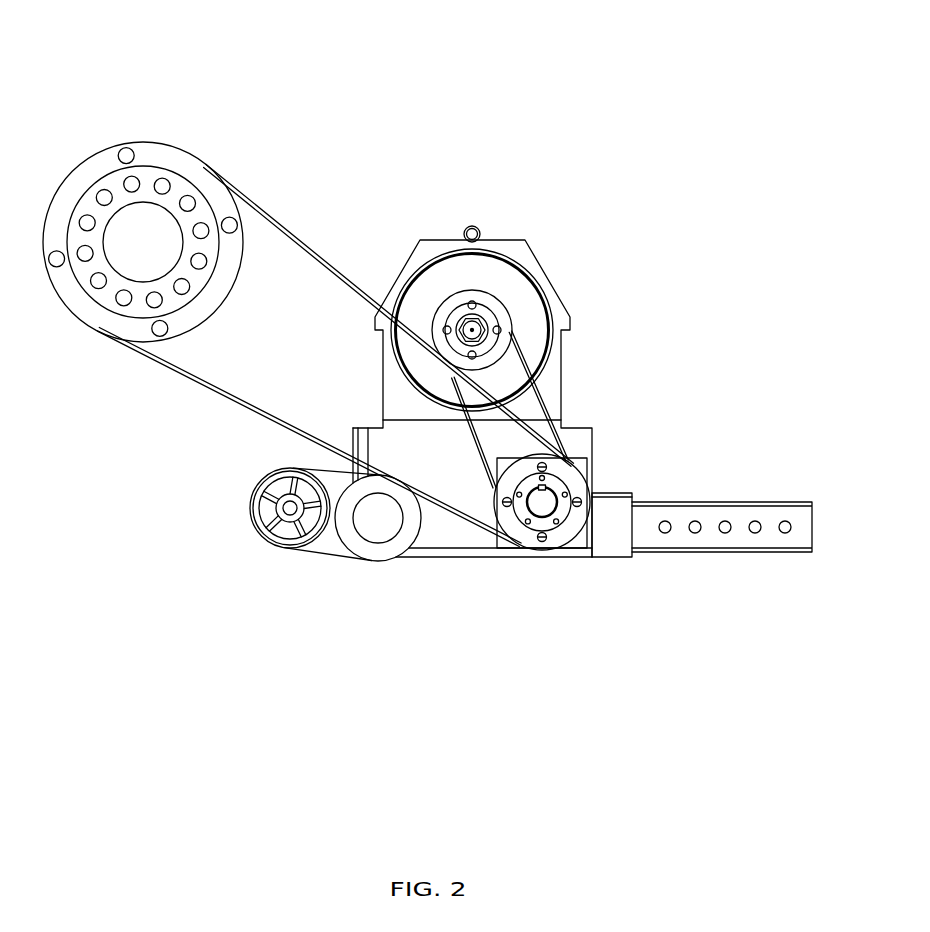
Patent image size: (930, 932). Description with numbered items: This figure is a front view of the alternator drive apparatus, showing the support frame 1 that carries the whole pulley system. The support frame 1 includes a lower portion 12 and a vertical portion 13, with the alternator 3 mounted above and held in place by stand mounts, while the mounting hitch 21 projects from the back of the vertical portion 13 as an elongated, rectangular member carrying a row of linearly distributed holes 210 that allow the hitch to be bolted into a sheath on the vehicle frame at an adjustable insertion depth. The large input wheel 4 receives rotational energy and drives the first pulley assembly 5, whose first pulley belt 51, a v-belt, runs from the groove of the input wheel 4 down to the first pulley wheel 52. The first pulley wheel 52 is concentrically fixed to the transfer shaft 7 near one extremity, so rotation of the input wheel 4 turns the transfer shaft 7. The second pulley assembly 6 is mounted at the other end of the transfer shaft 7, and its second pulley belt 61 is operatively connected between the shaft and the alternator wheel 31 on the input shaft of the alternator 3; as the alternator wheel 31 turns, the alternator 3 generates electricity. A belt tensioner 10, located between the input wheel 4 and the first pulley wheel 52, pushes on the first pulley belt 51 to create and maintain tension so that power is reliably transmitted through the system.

The support frame 1 is at (342, 417).
The alternator 3 is at (459, 264).
The alternator wheel 31 is at (497, 338).
The input wheel 4 is at (160, 155).
The first pulley assembly 5 is at (336, 390).
The first pulley belt 51 is at (278, 232).
The first pulley wheel 52 is at (518, 533).
The second pulley assembly 6 is at (577, 379).
The second pulley belt 61 is at (550, 397).
The transfer shaft 7 is at (543, 540).
The belt tensioner 10 is at (352, 548).
The lower portion 12 is at (428, 552).
The vertical portion 13 is at (452, 528).
The mounting hitch 21 is at (742, 512).
The adjusting holes 210 is at (665, 533).